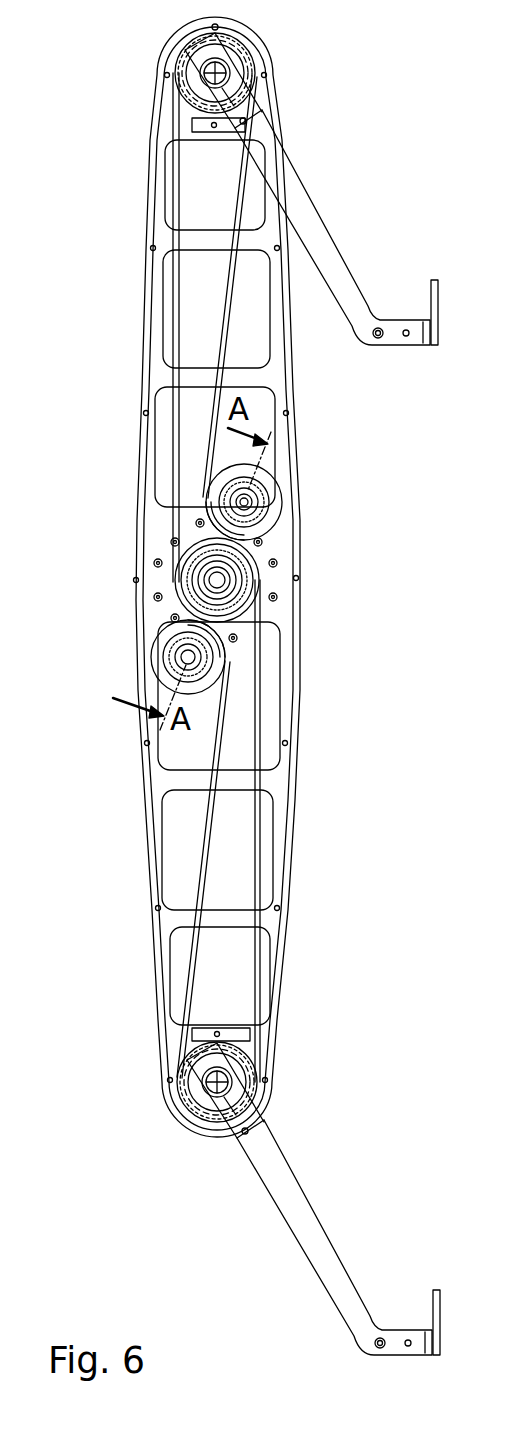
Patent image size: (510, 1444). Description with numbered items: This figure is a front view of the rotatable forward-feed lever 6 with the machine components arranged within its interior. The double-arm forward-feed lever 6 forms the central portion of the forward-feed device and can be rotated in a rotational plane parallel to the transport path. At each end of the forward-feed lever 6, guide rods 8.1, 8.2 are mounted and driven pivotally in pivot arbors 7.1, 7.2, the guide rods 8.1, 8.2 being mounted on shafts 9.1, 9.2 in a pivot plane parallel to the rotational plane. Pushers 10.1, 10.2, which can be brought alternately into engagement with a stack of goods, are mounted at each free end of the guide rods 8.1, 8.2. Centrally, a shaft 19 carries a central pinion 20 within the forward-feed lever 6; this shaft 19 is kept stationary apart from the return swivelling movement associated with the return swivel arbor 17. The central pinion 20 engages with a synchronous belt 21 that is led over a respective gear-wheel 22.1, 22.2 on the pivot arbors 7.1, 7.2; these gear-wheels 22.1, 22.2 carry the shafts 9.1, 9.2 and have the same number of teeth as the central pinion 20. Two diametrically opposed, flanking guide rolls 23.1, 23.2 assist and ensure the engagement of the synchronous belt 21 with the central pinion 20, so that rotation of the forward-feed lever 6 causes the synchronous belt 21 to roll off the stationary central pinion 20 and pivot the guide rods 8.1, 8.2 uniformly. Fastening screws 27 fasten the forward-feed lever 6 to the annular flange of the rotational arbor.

The forward-feed lever 6 is at (312, 523).
The pivot arbor 7.1 is at (250, 1080).
The pivot arbor 7.2 is at (238, 68).
The guide rod 8.1 is at (285, 1184).
The guide rod 8.2 is at (283, 175).
The shaft 9.1 is at (255, 1050).
The shaft 9.2 is at (250, 45).
The pusher 10.1 is at (431, 1300).
The pusher 10.2 is at (431, 292).
The return swivel arbor 17 is at (258, 561).
The shaft 19 is at (195, 605).
The central pinion 20 is at (275, 582).
The synchronous belt 21 is at (230, 373).
The gear-wheel 22.1 is at (255, 1094).
The gear-wheel 22.2 is at (250, 92).
The guide roll 23.1 is at (156, 655).
The guide roll 23.2 is at (273, 502).
The fastening screws 27 is at (172, 580).